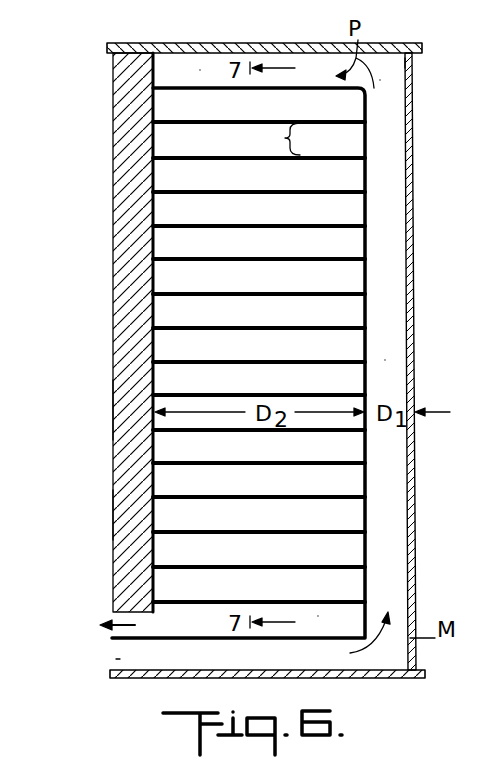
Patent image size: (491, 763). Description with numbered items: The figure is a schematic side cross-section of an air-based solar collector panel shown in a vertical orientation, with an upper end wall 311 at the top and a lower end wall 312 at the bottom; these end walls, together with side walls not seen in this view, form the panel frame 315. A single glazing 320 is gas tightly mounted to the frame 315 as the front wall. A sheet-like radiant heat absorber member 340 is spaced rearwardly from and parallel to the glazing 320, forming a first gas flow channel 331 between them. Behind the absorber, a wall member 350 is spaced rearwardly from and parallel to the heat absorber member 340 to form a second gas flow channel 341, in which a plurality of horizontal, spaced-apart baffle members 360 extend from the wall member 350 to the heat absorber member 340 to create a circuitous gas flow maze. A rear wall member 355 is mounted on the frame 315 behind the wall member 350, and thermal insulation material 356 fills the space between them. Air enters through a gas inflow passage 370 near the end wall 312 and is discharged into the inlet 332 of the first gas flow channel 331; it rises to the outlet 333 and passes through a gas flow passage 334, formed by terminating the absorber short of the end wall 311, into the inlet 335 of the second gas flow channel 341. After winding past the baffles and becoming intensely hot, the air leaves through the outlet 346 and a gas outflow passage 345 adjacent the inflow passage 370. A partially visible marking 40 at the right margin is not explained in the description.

The end wall 311 is at (272, 50).
The end wall 312 is at (282, 679).
The panel frame 315 is at (294, 361).
The glazing 320 is at (416, 455).
The first gas flow channel 331 is at (392, 358).
The inlet of first gas flow channel 332 is at (394, 654).
The outlet of first gas flow channel 333 is at (390, 77).
The gas flow passage 334 is at (372, 61).
The inlet of second gas flow channel 335 is at (204, 66).
The radiant heat absorber member 340 is at (293, 363).
The second gas flow channel 341 is at (175, 241).
The gas outflow passage 345 is at (102, 609).
The outlet of second gas flow channel 346 is at (321, 622).
The wall member 350 is at (155, 513).
The rear wall member 355 is at (115, 405).
The thermal insulation material 356 is at (125, 514).
The baffle members 360 is at (264, 139).
The gas inflow passage 370 is at (114, 659).
The enclosure 40 is at (476, 427).